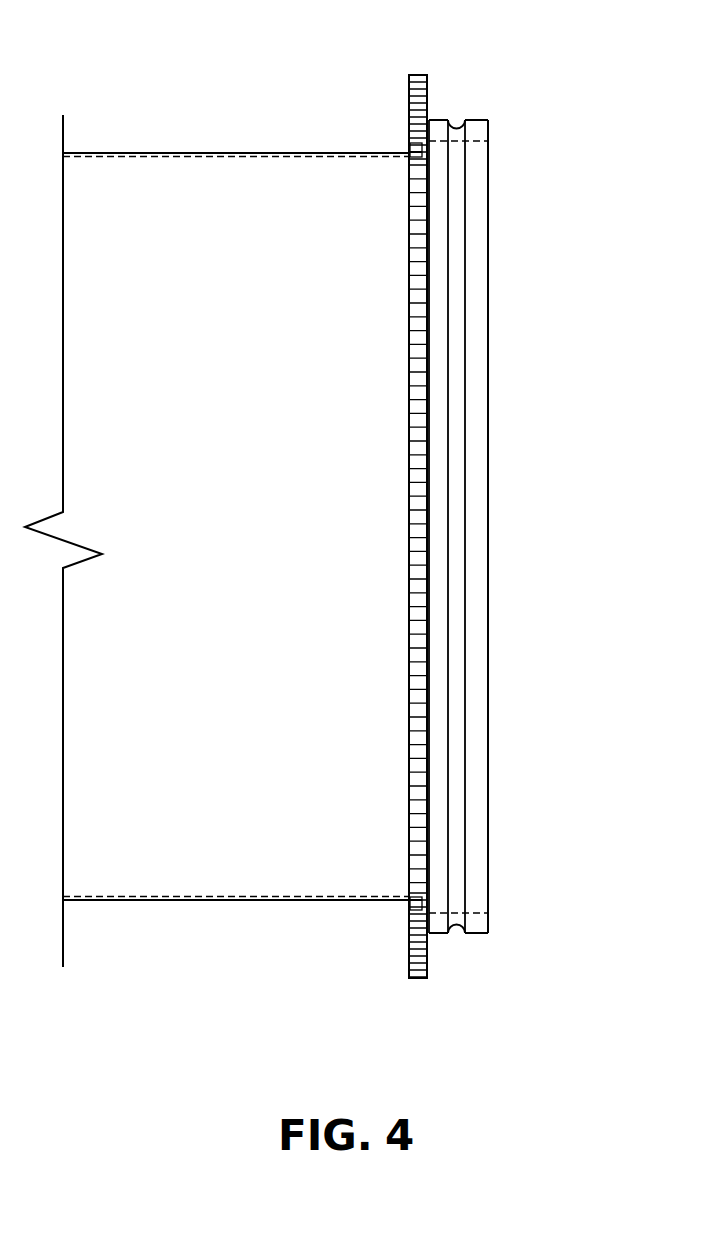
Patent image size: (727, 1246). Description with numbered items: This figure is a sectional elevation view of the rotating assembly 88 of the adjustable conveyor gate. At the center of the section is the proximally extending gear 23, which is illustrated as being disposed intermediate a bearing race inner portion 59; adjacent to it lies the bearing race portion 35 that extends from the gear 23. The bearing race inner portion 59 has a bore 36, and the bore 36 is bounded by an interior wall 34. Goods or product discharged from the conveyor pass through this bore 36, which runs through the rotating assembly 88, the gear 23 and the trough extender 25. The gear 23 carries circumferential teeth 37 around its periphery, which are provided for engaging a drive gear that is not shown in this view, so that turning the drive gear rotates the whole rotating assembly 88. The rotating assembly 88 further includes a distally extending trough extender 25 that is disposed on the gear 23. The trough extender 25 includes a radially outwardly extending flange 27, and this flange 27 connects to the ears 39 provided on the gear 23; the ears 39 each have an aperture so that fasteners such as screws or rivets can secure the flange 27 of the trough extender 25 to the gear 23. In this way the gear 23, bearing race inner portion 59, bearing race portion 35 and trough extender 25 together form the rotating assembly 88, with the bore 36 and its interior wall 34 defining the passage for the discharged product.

The rotating assembly 88 is at (204, 101).
The circumferential teeth 37 is at (415, 73).
The bearing race inner portion 59 is at (460, 119).
The ears 39 is at (410, 147).
The radially outwardly extending flange 27 is at (420, 152).
The gear 23 is at (408, 319).
The bearing race portion 35 is at (490, 295).
The bore 36 is at (490, 520).
The interior wall 34 is at (475, 912).
The trough extender 25 is at (173, 900).